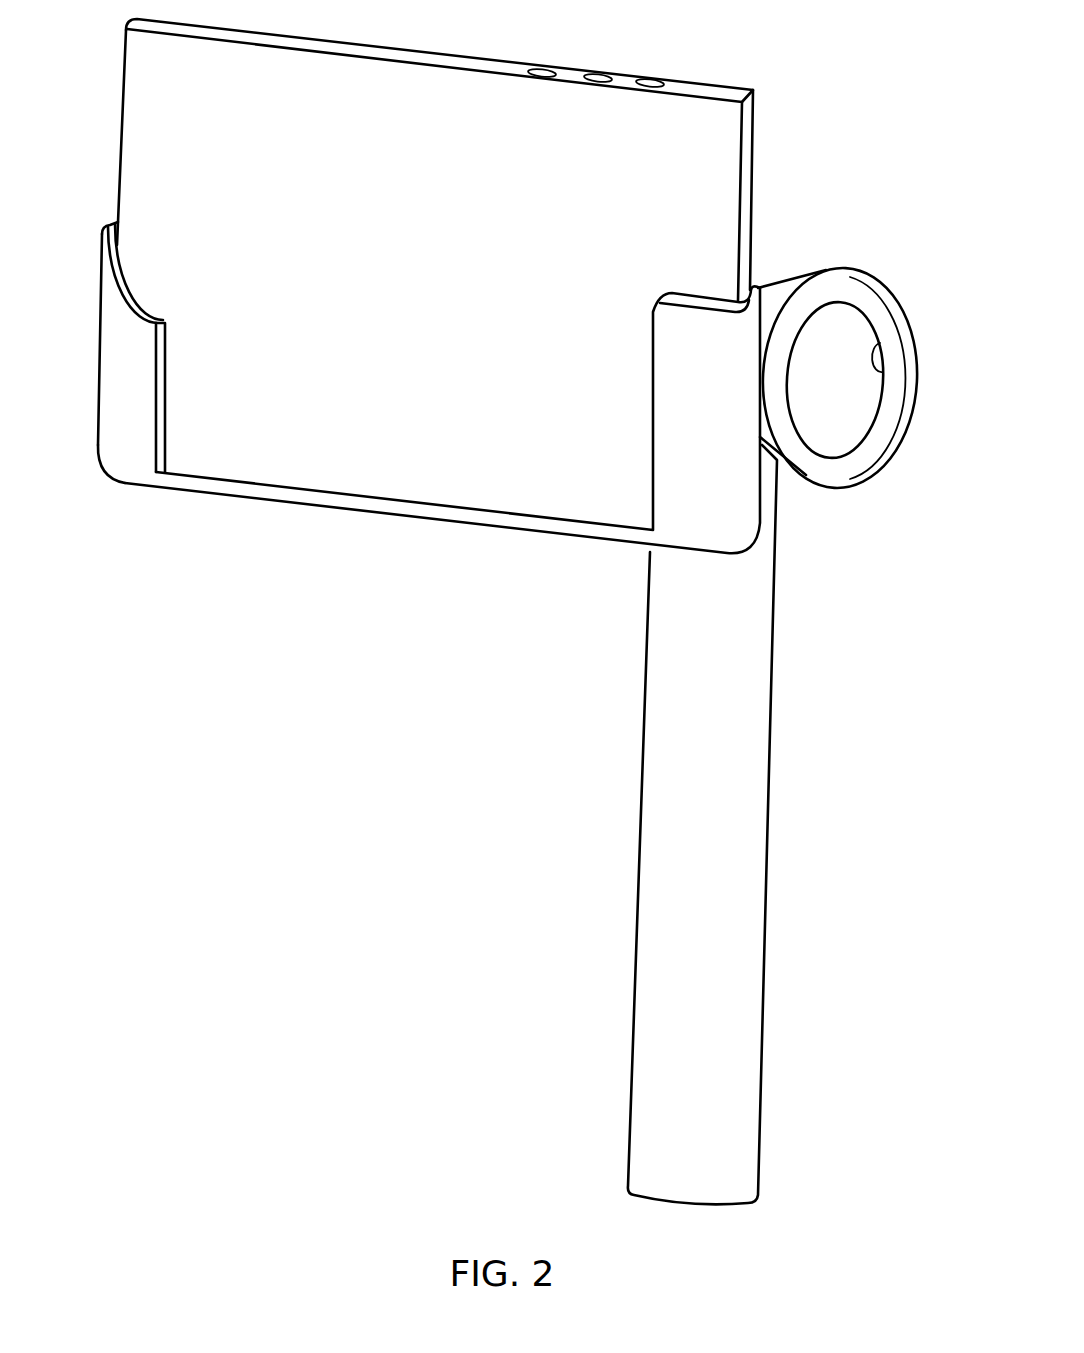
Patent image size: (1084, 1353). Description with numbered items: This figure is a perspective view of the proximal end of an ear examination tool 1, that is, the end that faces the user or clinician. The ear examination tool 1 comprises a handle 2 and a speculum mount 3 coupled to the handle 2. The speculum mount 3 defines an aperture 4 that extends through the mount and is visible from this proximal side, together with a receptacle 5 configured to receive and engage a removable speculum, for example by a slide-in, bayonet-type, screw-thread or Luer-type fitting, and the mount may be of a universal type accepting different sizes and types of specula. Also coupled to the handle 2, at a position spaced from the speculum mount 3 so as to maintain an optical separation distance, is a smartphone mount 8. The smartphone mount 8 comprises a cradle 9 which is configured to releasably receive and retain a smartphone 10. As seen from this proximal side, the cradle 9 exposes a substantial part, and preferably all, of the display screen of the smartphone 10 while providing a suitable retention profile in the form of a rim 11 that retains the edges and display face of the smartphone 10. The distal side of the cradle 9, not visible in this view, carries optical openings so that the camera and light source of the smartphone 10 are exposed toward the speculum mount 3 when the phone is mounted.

The ear examination tool 1 is at (873, 113).
The handle 2 is at (768, 880).
The speculum mount 3 is at (865, 302).
The aperture 4 is at (838, 412).
The receptacle 5 is at (905, 348).
The smartphone mount 8 is at (102, 318).
The cradle 9 is at (134, 440).
The smartphone 10 is at (720, 115).
The rim 11 is at (113, 408).